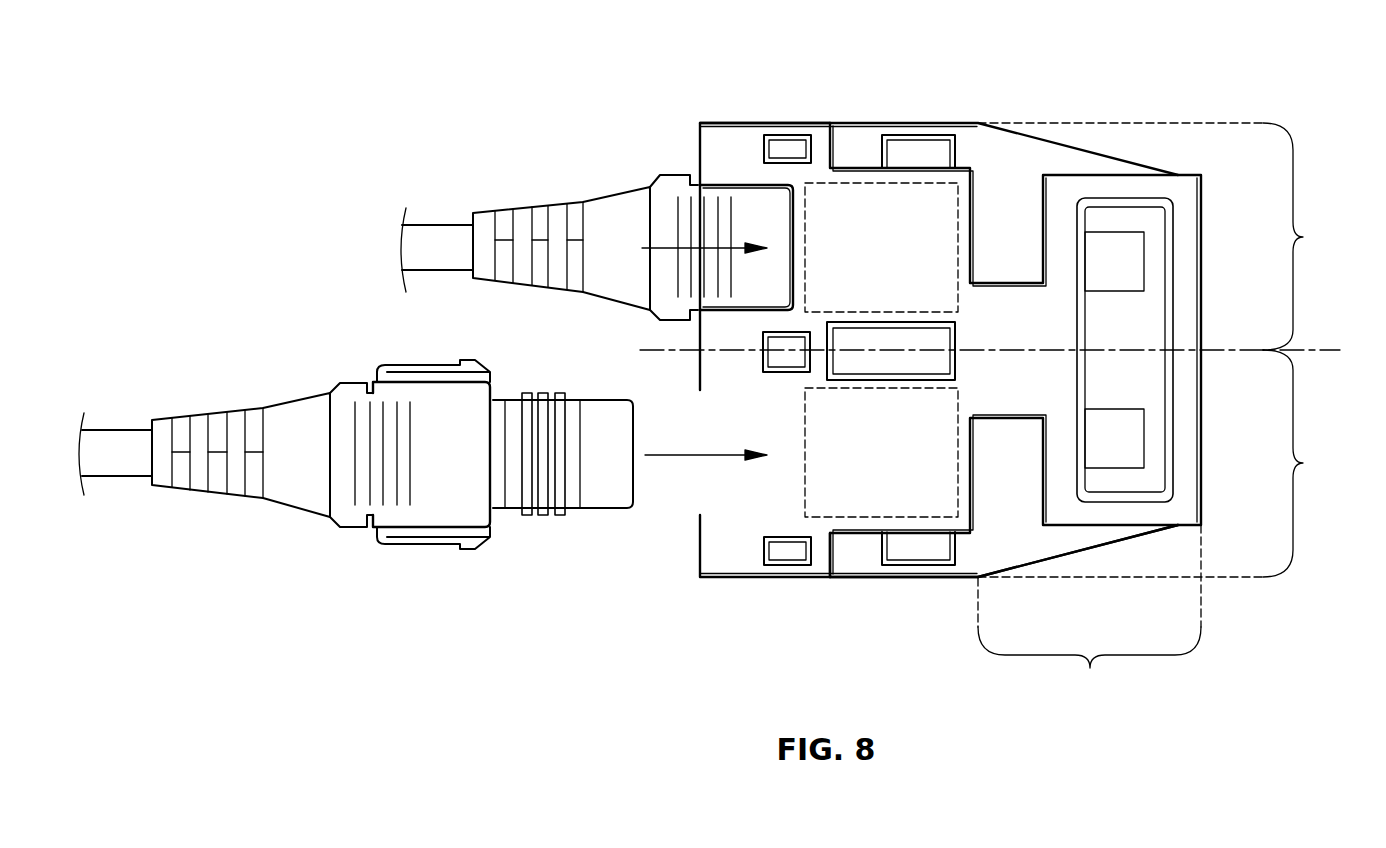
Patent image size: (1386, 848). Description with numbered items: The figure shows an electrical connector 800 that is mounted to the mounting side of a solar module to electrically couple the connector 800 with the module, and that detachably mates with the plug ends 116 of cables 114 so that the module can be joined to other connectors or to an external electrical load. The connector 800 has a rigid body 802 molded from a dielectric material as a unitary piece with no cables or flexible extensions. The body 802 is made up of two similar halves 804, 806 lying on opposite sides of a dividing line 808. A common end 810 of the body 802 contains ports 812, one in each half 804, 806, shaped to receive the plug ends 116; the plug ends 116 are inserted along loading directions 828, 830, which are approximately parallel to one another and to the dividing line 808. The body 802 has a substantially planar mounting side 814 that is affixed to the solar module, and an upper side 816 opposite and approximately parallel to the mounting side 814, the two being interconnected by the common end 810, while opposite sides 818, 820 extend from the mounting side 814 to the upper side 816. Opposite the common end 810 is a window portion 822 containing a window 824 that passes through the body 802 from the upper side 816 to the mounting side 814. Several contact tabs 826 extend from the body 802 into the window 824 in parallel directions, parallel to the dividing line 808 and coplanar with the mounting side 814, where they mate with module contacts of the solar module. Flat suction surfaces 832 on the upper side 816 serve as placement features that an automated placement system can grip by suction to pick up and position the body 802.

The cable 114 is at (435, 225).
The plug end 116 is at (441, 500).
The electrical connector 800 is at (1036, 140).
The rigid body 802 is at (1013, 153).
The first half 804 is at (1303, 237).
The second half 806 is at (1303, 463).
The dividing line 808 is at (1324, 350).
The common end 810 is at (700, 140).
The port 812 is at (790, 208).
The mounting side 814 is at (875, 580).
The upper side 816 is at (823, 555).
The side 818 is at (936, 580).
The side 820 is at (797, 122).
The window portion 822 is at (1090, 668).
The window 824 is at (1133, 320).
The contact tab 826 is at (1127, 440).
The loading direction 828 is at (663, 248).
The loading direction 830 is at (662, 445).
The suction surface 832 is at (868, 208).